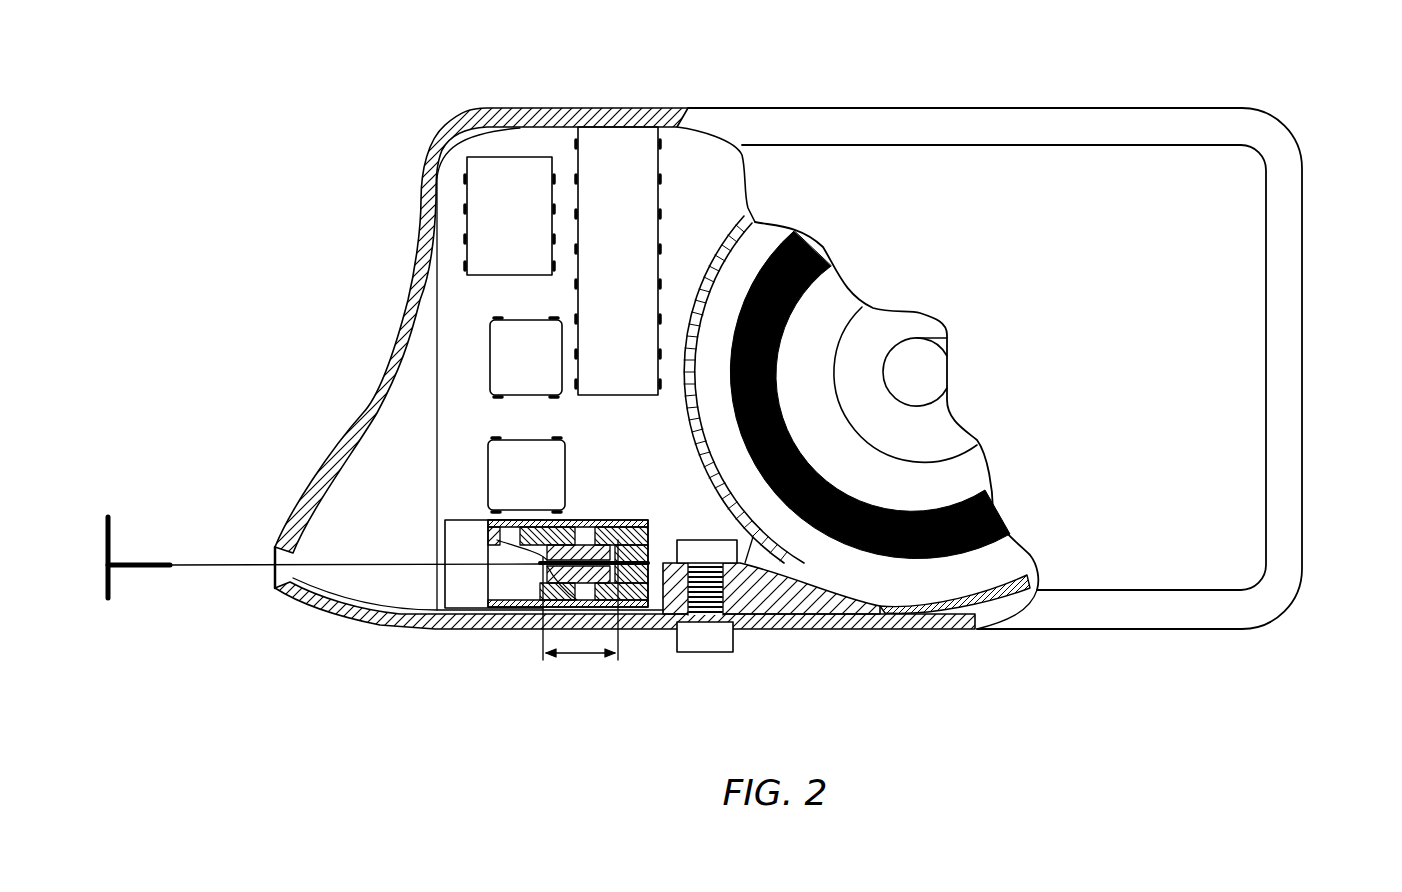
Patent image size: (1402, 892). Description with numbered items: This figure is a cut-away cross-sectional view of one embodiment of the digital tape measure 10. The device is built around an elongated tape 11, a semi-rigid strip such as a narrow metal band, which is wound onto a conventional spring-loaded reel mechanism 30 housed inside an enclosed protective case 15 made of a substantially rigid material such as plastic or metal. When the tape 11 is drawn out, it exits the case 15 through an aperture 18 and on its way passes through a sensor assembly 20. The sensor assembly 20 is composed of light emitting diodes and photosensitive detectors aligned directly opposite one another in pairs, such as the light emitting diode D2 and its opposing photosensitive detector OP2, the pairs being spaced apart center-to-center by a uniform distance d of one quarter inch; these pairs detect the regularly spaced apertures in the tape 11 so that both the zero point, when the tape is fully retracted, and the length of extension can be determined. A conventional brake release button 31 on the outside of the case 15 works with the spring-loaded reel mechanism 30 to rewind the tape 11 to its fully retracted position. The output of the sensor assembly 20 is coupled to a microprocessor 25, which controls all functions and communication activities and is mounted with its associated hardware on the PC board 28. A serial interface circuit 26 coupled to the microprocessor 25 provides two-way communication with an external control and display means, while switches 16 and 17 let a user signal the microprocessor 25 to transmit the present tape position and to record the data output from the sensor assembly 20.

The digital tape measure 10 is at (1091, 392).
The elongated tape 11 is at (843, 565).
The protective case 15 is at (1303, 239).
The switch 16 is at (508, 373).
The switch 17 is at (508, 493).
The aperture 18 is at (275, 567).
The sensor assembly 20 is at (469, 592).
The microprocessor 25 is at (604, 278).
The serial interface circuit 26 is at (492, 234).
The PC board 28 is at (437, 482).
The spring-loaded reel mechanism 30 is at (910, 555).
The brake release button 31 is at (707, 655).
The light emitting diode D2 is at (625, 552).
The photosensitive detector OP2 is at (650, 600).